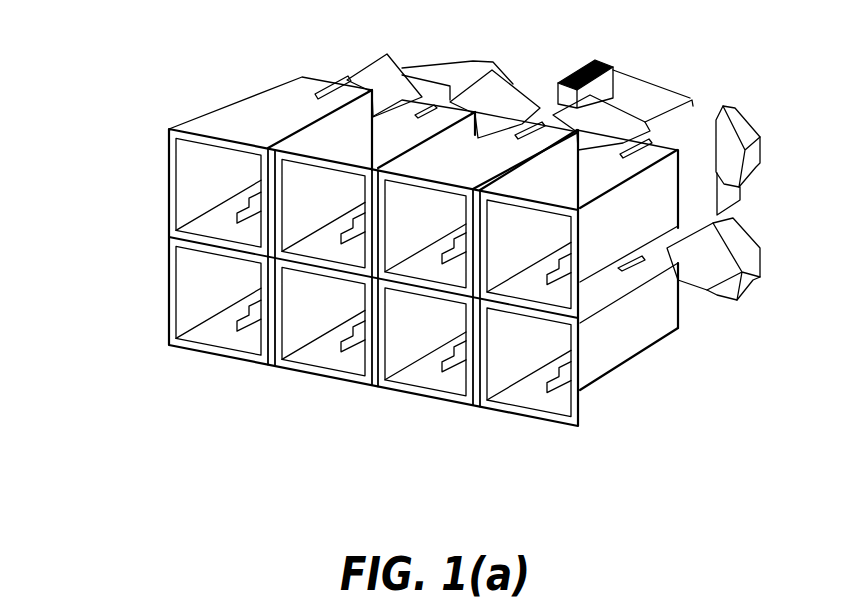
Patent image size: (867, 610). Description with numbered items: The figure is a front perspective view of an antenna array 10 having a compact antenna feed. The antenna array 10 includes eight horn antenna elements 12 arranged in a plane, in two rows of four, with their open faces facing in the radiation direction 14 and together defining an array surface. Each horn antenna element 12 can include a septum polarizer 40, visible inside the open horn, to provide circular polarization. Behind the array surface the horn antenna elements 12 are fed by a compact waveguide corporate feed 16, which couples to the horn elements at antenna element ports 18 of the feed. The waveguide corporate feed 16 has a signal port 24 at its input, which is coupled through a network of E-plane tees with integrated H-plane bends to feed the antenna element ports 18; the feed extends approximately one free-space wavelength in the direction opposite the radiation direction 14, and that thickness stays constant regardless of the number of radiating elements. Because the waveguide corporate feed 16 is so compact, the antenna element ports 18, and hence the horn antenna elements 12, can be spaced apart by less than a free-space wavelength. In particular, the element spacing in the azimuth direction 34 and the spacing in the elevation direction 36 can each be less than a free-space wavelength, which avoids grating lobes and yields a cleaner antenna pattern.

The antenna array 10 is at (138, 103).
The horn antenna elements 12 is at (327, 368).
The radiation direction 14 is at (162, 204).
The waveguide corporate feed 16 is at (731, 333).
The antenna element ports 18 is at (678, 302).
The signal port 24 is at (598, 71).
The azimuth direction 34 is at (420, 455).
The elevation direction 36 is at (34, 156).
The septum polarizer 40 is at (240, 328).